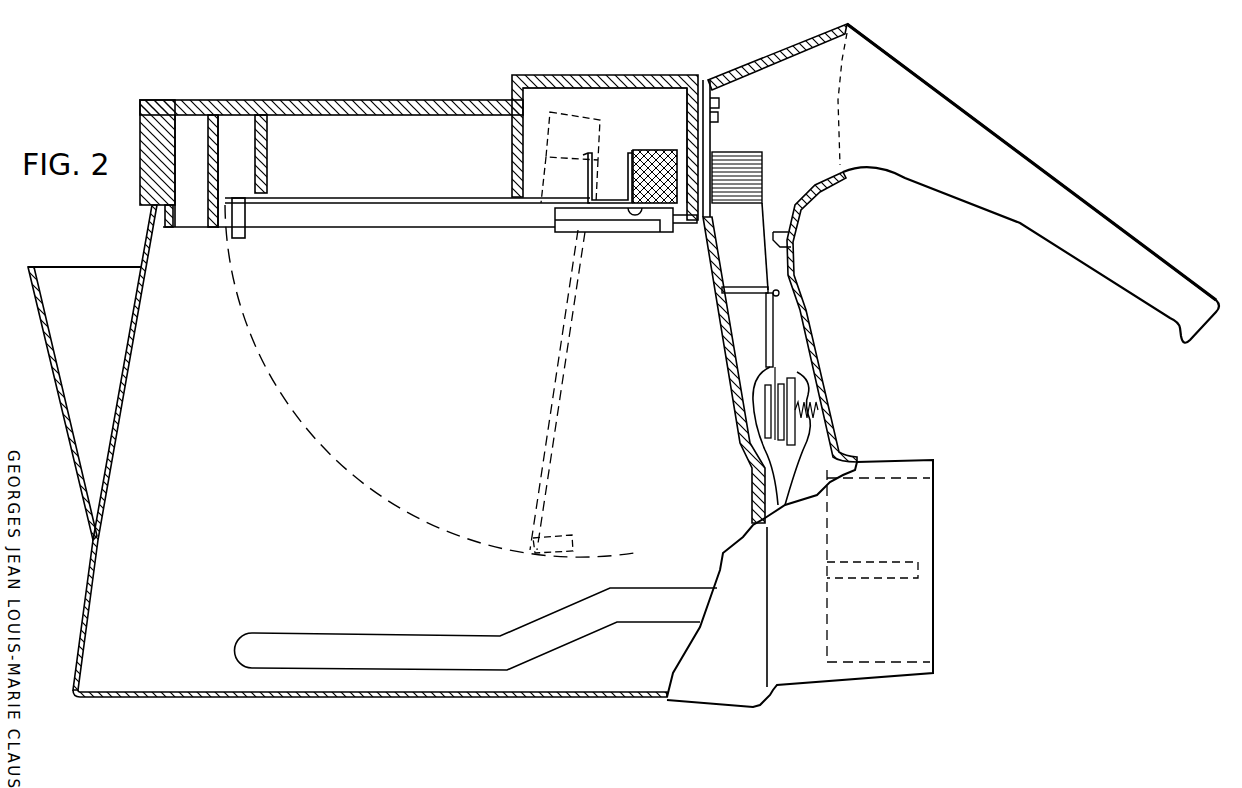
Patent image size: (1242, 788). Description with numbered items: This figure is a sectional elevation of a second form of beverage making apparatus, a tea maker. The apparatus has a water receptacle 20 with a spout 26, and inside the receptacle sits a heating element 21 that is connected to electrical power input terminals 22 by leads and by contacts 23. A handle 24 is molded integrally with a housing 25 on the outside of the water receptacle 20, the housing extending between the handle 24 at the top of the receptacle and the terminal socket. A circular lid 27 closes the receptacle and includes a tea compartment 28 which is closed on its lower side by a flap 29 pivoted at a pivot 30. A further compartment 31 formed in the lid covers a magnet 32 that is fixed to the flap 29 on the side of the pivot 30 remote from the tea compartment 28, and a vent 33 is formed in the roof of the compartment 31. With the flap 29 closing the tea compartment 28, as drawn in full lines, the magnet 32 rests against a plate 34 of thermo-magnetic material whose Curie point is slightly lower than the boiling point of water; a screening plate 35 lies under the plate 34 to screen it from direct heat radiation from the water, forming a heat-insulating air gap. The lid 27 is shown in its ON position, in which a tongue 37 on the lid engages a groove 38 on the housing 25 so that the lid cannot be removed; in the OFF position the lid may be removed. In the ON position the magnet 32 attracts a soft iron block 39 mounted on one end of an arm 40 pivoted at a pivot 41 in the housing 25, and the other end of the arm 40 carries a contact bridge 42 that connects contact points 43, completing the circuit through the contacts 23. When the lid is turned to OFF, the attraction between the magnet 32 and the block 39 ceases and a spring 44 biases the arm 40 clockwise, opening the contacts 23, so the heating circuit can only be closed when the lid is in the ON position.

The water receptacle 20 is at (88, 583).
The heating element 21 is at (410, 640).
The electrical power input terminals 22 is at (905, 562).
The contacts 23 is at (805, 385).
The handle 24 is at (1022, 222).
The housing 25 is at (808, 322).
The spout 26 is at (50, 350).
The circular lid 27 is at (545, 75).
The tea compartment 28 is at (395, 172).
The flap 29 is at (412, 203).
The pivot 30 is at (590, 197).
The compartment 31 is at (668, 88).
The magnet 32 is at (658, 150).
The vent 33 is at (642, 76).
The plate 34 is at (664, 222).
The screening plate 35 is at (610, 232).
The tongue 37 is at (718, 118).
The groove 38 is at (719, 104).
The soft iron block 39 is at (762, 158).
The arm 40 is at (764, 232).
The pivot 41 is at (780, 290).
The contact bridge 42 is at (755, 395).
The contact points 43 is at (800, 425).
The spring 44 is at (805, 407).